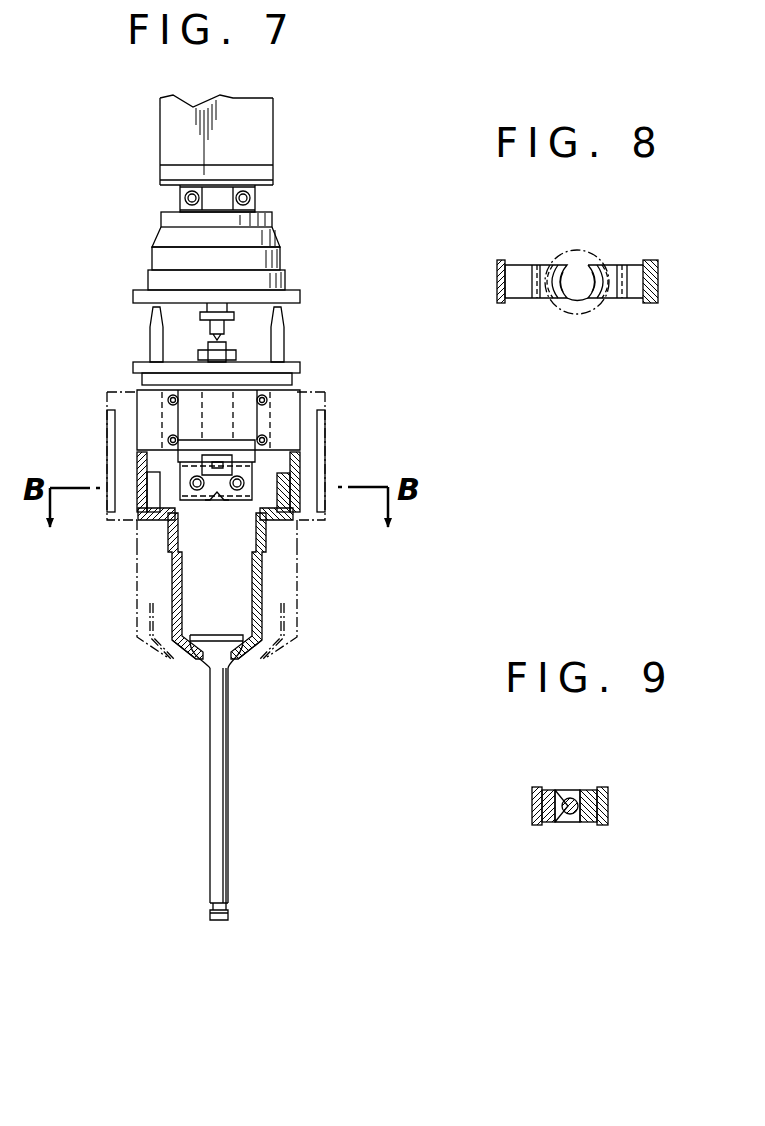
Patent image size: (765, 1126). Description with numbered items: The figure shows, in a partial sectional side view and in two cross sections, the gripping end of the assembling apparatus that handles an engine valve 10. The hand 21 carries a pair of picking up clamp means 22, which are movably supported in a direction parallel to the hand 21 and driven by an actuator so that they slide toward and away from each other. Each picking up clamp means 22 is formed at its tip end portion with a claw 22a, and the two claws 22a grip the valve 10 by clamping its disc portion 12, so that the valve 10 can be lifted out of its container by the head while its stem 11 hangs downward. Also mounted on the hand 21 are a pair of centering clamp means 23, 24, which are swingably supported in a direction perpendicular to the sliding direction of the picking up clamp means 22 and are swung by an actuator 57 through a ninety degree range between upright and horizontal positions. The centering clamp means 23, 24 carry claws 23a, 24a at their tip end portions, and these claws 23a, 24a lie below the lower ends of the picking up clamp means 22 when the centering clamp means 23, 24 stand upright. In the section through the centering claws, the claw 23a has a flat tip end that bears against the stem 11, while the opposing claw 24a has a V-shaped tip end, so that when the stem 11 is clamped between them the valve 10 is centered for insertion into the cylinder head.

In FIG. 7, the valve 10 is at (231, 803).
In FIG. 8, the valve 10 is at (556, 309).
In FIG. 7, the stem 11 is at (229, 840).
In FIG. 9, the stem 11 is at (575, 797).
In FIG. 7, the disc portion 12 is at (233, 633).
In FIG. 8, the disc portion 12 is at (592, 247).
In FIG. 7, the hand 21 is at (158, 175).
In FIG. 7, the picking up clamp means 22 is at (168, 563).
In FIG. 8, the picking up clamp means 22 is at (518, 300).
In FIG. 7, the claw 22a is at (193, 655).
In FIG. 8, the claw 22a is at (560, 268).
In FIG. 9, the centering clamp means 23 is at (608, 807).
In FIG. 9, the claw 23a is at (588, 790).
In FIG. 7, the centering clamp means 24 is at (225, 453).
In FIG. 9, the centering clamp means 24 is at (532, 805).
In FIG. 7, the claw 24a is at (222, 500).
In FIG. 9, the claw 24a is at (562, 822).
In FIG. 7, the actuator 57 is at (210, 393).